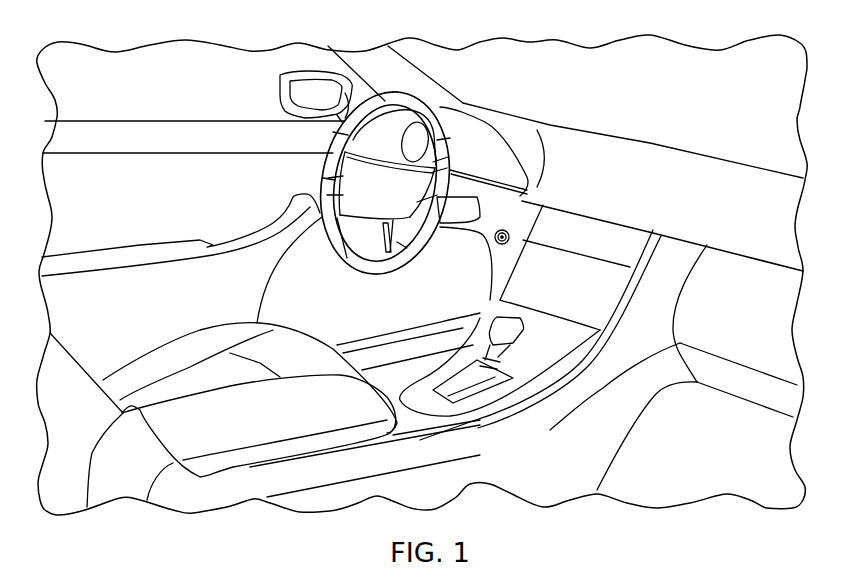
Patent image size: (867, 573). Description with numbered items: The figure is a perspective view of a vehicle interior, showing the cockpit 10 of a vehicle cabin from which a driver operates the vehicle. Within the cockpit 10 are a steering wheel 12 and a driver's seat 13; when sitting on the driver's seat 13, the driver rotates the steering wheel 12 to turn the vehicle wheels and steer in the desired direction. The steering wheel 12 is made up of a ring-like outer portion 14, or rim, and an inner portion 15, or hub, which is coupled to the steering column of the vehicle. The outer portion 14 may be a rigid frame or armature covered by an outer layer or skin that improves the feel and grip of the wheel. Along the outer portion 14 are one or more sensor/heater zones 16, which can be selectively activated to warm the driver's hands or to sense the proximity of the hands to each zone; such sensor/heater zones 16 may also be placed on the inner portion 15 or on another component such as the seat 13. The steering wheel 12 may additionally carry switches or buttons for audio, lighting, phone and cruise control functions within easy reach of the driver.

The cockpit 10 is at (592, 72).
The steering wheel 12 is at (407, 89).
The driver's seat 13 is at (208, 370).
The outer portion 14 is at (403, 257).
The inner portion 15 is at (363, 167).
The sensor/heater zones 16 is at (322, 187).